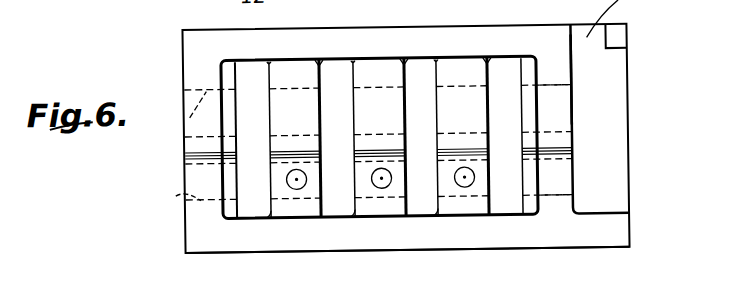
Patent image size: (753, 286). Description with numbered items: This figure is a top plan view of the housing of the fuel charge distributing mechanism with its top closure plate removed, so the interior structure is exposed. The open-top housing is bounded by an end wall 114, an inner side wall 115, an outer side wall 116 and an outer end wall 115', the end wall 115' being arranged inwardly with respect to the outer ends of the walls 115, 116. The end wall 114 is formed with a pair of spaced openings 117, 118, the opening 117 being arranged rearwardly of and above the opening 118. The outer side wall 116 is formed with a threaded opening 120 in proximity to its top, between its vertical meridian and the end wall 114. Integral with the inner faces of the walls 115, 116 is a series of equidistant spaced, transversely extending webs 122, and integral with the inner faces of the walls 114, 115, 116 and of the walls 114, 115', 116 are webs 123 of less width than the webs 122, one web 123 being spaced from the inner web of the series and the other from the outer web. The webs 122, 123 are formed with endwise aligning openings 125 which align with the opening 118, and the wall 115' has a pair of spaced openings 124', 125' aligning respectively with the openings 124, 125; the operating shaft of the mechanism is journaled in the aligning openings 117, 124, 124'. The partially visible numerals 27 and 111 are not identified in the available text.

The conduit 27 is at (124, 6).
The housing 111 is at (189, 6).
The end wall 114 is at (193, 68).
The inner side wall 115 is at (582, 107).
The outer end wall 115' is at (593, 79).
The outer side wall 116 is at (540, 238).
The opening 117 is at (182, 125).
The opening 118 is at (175, 196).
The opening 120 is at (353, 172).
The webs 122 is at (407, 73).
The webs 123 is at (232, 81).
The opening 124 is at (377, 68).
The opening 124' is at (582, 100).
The openings 125 is at (379, 222).
The opening 125' is at (585, 177).